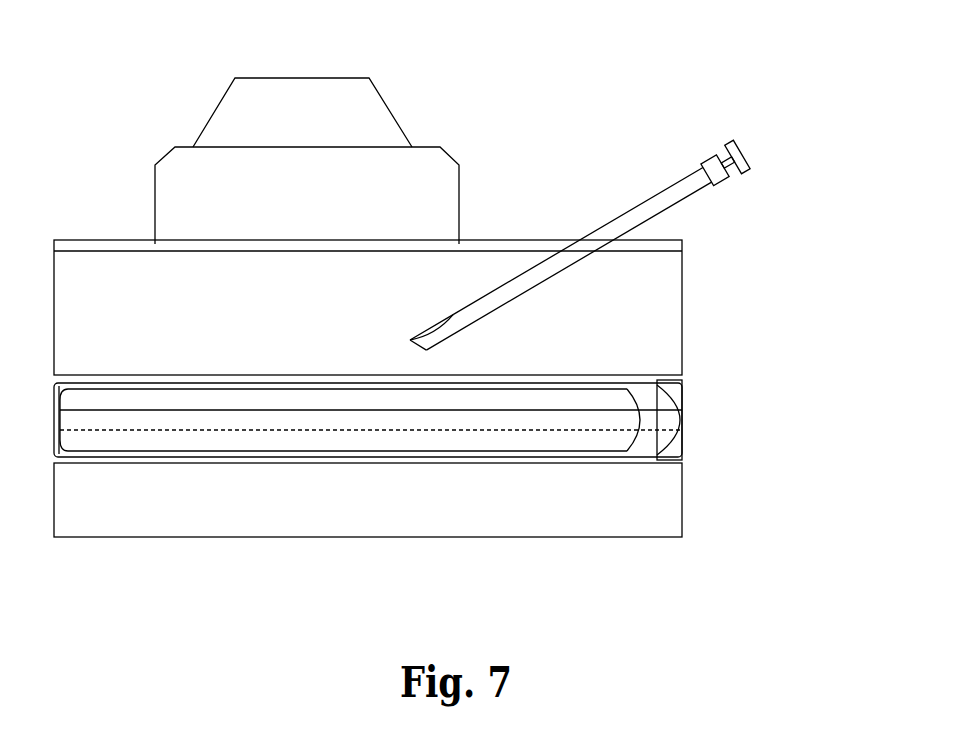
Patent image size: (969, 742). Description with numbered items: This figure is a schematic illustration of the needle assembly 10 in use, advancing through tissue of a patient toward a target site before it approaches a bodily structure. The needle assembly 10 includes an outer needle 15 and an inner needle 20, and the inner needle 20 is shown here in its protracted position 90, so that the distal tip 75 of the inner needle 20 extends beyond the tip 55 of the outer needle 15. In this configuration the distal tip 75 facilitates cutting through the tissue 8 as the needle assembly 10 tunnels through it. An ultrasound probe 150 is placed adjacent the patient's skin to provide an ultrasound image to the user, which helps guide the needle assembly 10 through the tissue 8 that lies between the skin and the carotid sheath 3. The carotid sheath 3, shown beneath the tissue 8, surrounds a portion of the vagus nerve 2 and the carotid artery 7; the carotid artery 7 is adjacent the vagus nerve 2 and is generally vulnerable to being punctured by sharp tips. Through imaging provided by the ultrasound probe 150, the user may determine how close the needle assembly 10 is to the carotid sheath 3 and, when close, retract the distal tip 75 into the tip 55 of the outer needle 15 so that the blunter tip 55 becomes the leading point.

The needle assembly 10 is at (687, 86).
The outer needle 15 is at (548, 244).
The inner needle 20 is at (736, 118).
The protracted position 90 is at (565, 258).
The ultrasound probe 150 is at (372, 90).
The tissue 8 is at (658, 305).
The distal tip of the inner needle 75 is at (436, 335).
The distal tip of the outer needle 55 is at (432, 329).
The carotid sheath 3 is at (684, 457).
The carotid artery 7 is at (676, 446).
The vagus nerve 2 is at (652, 436).